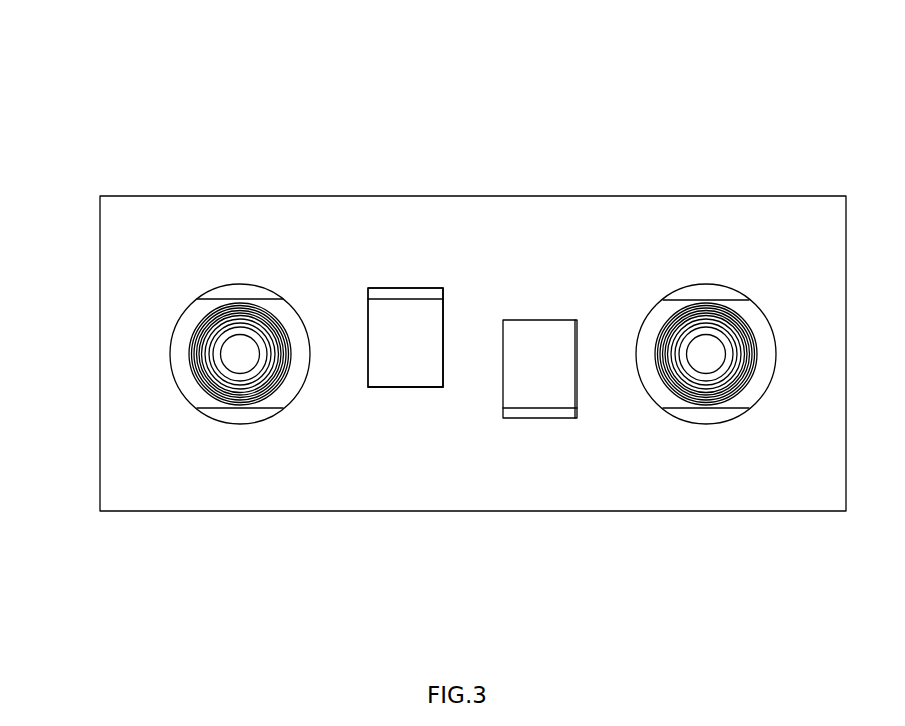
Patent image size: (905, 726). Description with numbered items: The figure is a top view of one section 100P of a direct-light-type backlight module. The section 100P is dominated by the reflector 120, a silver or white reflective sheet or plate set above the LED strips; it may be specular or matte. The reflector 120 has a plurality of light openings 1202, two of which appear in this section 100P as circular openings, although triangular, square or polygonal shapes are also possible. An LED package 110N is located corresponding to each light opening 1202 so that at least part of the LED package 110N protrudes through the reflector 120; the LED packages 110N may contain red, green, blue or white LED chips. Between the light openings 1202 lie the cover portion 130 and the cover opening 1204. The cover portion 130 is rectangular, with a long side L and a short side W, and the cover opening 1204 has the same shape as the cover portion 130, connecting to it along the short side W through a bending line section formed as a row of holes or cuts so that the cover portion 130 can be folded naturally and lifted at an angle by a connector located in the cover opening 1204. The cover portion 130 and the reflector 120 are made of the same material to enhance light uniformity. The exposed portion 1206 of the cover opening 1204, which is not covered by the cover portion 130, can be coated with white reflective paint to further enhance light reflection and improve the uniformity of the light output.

The section of the direct-light-type backlight module 100P is at (95, 84).
The reflector 120 is at (252, 212).
The cover portion 130 is at (393, 325).
The exposed portion 1206 is at (421, 292).
The cover opening 1204 is at (531, 418).
The light opening 1202 is at (706, 356).
The LED package 110N is at (708, 348).
The long side L is at (445, 330).
The short side W is at (413, 386).